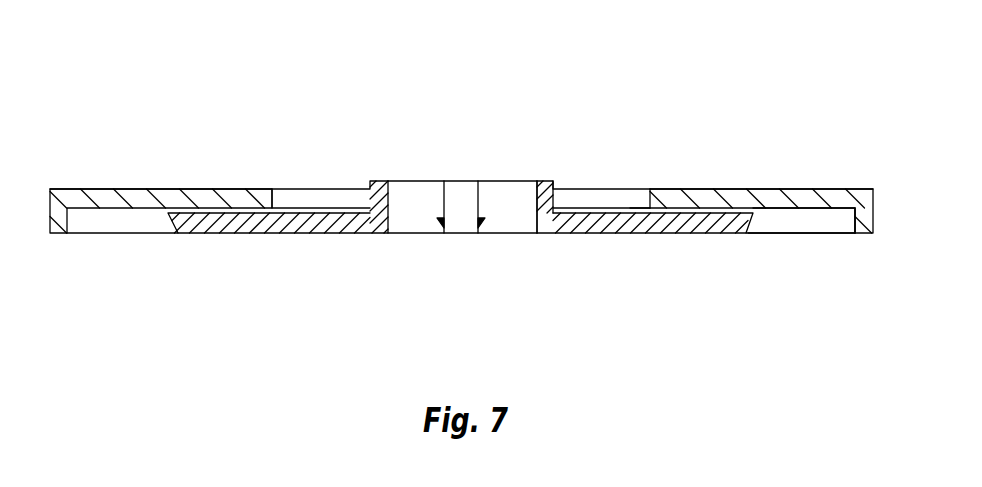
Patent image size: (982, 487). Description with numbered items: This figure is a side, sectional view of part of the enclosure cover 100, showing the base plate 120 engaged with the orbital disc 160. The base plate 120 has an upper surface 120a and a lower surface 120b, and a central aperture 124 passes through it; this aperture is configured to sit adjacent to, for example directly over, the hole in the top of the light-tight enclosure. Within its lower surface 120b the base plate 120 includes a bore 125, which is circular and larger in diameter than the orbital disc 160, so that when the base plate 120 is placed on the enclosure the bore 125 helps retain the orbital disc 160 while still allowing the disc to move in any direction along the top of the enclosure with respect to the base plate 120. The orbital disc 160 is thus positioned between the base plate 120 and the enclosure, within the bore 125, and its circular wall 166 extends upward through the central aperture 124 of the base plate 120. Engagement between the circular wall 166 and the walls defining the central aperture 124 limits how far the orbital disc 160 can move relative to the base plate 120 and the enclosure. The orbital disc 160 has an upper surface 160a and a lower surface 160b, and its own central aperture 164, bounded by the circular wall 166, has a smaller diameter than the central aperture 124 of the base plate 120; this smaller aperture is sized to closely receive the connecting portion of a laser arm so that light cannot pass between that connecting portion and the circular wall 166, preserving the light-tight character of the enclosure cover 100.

The enclosure cover 100 is at (323, 110).
The base plate 120 is at (139, 188).
The upper surface of base plate 120a is at (793, 189).
The lower surface of base plate 120b is at (822, 212).
The central aperture of base plate 124 is at (578, 196).
The bore 125 is at (787, 226).
The orbital disc 160 is at (287, 234).
The upper surface of orbital disc 160a is at (643, 207).
The lower surface of orbital disc 160b is at (655, 234).
The central aperture of orbital disc 164 is at (505, 205).
The circular wall 166 is at (540, 200).